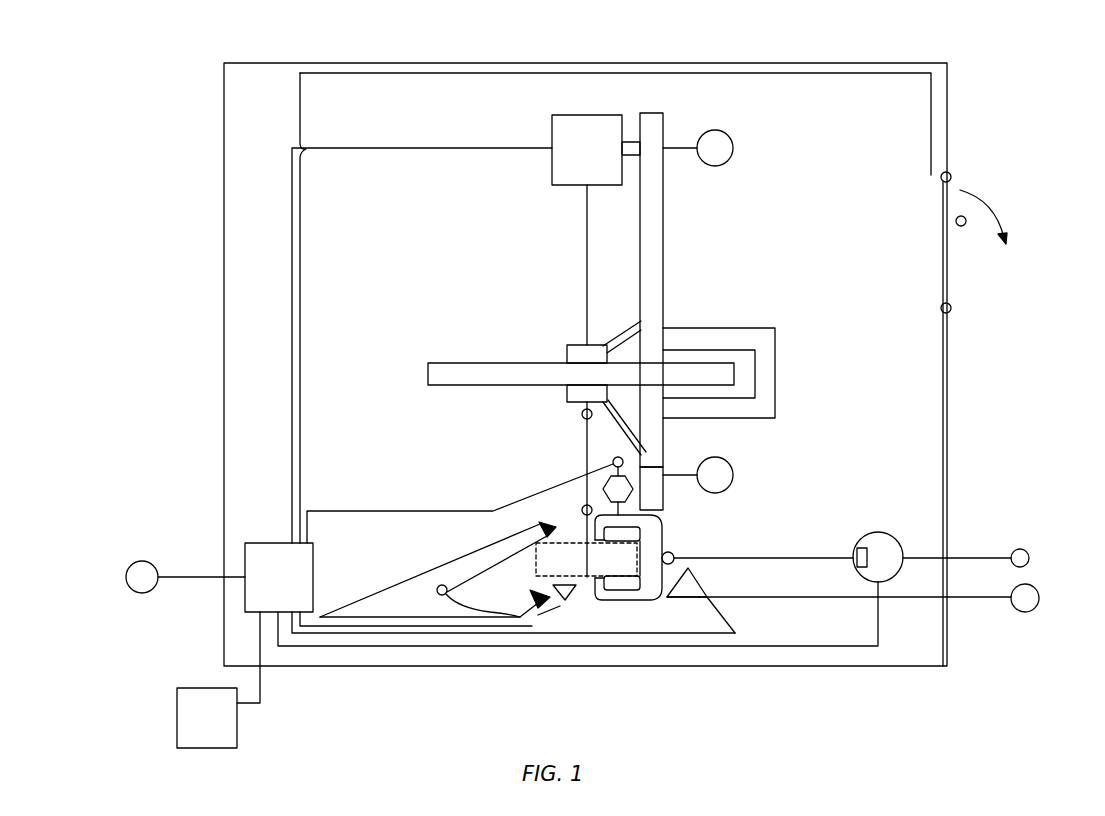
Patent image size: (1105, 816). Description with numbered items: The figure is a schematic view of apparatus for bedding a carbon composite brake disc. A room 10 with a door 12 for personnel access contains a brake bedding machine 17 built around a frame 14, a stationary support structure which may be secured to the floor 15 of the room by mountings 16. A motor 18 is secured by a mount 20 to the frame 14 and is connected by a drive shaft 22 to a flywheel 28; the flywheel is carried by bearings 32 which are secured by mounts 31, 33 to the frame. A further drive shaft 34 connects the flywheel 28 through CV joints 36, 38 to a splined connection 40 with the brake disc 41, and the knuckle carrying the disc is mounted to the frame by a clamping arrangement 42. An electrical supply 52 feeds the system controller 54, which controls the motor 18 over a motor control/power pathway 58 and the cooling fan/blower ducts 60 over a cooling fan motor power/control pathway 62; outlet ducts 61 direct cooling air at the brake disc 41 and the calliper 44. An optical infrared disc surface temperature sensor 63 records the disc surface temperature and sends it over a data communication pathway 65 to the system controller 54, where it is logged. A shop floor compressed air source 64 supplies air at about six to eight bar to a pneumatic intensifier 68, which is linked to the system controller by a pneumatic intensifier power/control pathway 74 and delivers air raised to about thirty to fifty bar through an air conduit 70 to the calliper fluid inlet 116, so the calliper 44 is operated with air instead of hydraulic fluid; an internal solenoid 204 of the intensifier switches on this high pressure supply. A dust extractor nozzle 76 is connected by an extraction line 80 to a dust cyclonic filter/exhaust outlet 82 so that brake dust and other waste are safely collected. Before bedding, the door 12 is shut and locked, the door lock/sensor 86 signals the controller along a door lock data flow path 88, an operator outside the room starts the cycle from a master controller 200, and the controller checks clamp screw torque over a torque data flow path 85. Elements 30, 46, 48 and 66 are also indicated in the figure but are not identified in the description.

The room 10 is at (948, 110).
The door 12 is at (949, 282).
The frame 14 is at (664, 240).
The floor 15 is at (836, 250).
The mountings 16 is at (733, 150).
The brake bedding machine 17 is at (210, 130).
The motor 18 is at (552, 130).
The mount 20 is at (636, 140).
The drive shaft 22 is at (584, 240).
The flywheel 28 is at (452, 363).
The upper bearing 30 is at (572, 345).
The mount 31 is at (622, 334).
The bearings 32 is at (566, 398).
The mount 33 is at (622, 438).
The drive shaft 34 is at (612, 466).
The CV joint 36 is at (582, 414).
The CV joint 38 is at (582, 510).
The splined connection 40 is at (578, 568).
The brake disc 41 is at (652, 598).
The clamping arrangement 42 is at (663, 467).
The calliper 44 is at (662, 533).
The upper jaw 46 is at (604, 592).
The lower jaw 48 is at (634, 570).
The electrical supply 52 is at (126, 577).
The system controller 54 is at (245, 558).
The motor control/power pathway 58 is at (290, 490).
The cooling fan/blower ducts 60 is at (538, 514).
The outlet ducts 61 is at (440, 586).
The cooling fan motor power/control pathway 62 is at (380, 634).
The optical IR disc surface temperature sensor 63 is at (570, 602).
The data communication pathway 65 is at (530, 627).
The shop floor compressed air source 64 is at (1030, 558).
The conduit 66 is at (988, 557).
The pneumatic intensifier 68 is at (890, 535).
The air conduit 70 is at (830, 556).
The pneumatic intensifier power/control pathway 74 is at (853, 648).
The dust extractor nozzle 76 is at (700, 580).
The extraction line 80 is at (986, 600).
The dust cyclonic filter/exhaust outlet 82 is at (1040, 598).
The torque data flow path 85 is at (354, 511).
The door lock/sensor 86 is at (953, 176).
The door lock data flow path 88 is at (875, 74).
The calliper fluid inlet 116 is at (676, 554).
The master controller 200 is at (177, 703).
The internal solenoid 204 is at (858, 540).